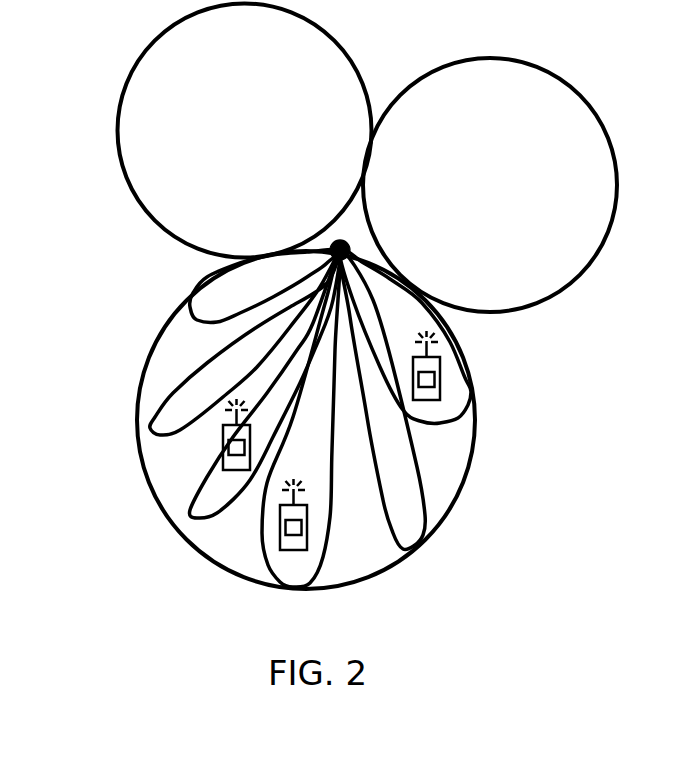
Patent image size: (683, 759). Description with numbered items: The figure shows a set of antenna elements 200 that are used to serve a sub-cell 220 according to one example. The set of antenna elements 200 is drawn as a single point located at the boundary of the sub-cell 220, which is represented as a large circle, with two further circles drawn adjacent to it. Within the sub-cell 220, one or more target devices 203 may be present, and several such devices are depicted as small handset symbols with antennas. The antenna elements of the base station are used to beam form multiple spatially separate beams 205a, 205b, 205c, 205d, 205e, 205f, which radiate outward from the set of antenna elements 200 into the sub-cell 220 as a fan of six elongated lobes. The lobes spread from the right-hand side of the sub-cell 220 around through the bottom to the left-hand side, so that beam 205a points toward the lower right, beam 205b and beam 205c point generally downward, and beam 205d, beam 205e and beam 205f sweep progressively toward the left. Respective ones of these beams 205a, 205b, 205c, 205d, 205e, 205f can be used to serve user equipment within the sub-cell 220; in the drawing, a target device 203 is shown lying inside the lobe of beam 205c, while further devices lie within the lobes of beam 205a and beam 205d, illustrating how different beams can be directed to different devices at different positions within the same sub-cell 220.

The set of antenna elements 200 is at (337, 243).
The sub-cell 220 is at (155, 335).
The target device 203 is at (293, 550).
The beam 205a is at (465, 413).
The beam 205b is at (427, 520).
The beam 205c is at (263, 533).
The beam 205d is at (183, 480).
The beam 205e is at (157, 390).
The beam 205f is at (193, 288).